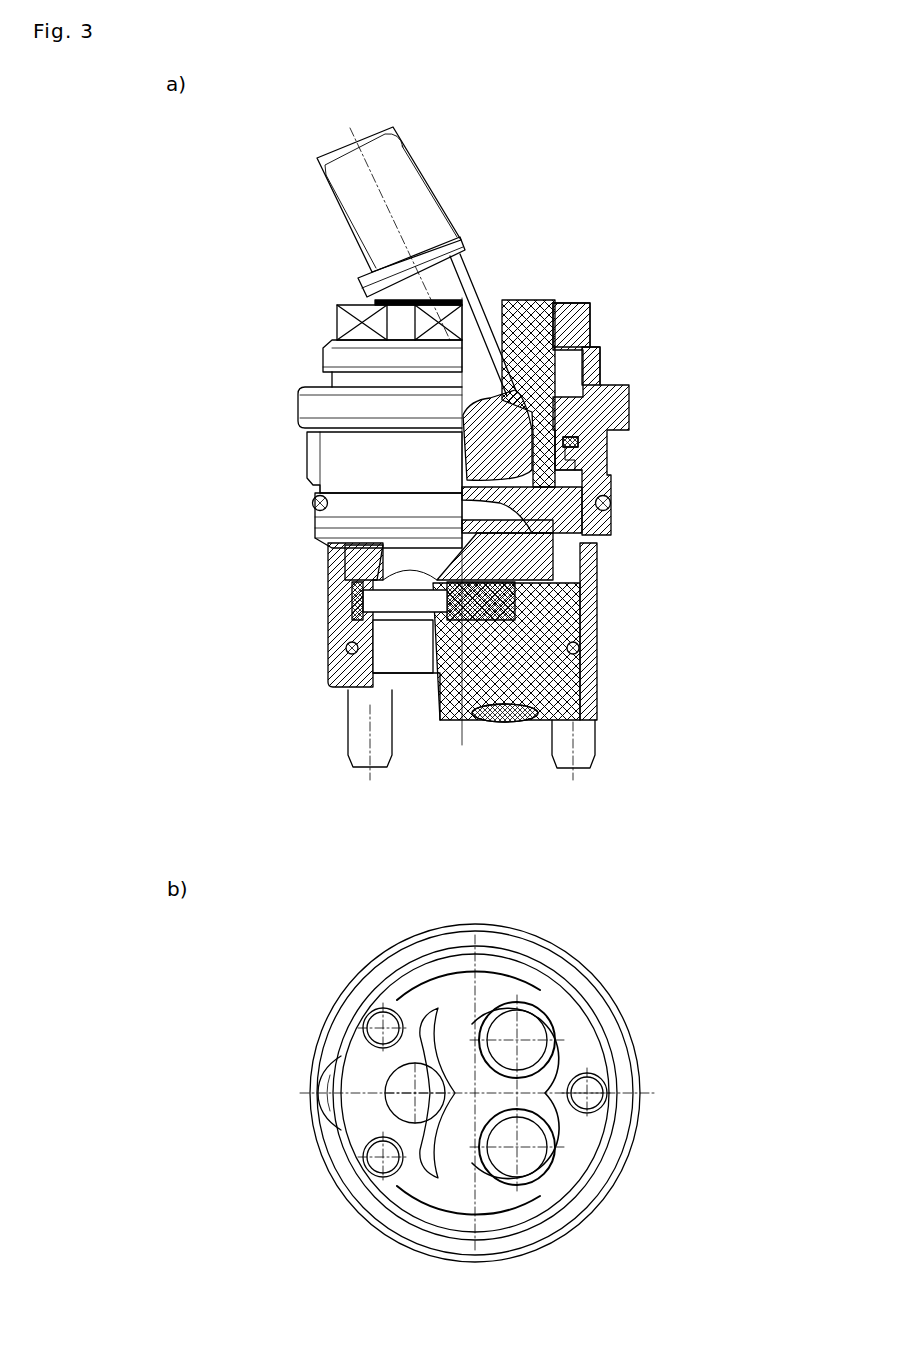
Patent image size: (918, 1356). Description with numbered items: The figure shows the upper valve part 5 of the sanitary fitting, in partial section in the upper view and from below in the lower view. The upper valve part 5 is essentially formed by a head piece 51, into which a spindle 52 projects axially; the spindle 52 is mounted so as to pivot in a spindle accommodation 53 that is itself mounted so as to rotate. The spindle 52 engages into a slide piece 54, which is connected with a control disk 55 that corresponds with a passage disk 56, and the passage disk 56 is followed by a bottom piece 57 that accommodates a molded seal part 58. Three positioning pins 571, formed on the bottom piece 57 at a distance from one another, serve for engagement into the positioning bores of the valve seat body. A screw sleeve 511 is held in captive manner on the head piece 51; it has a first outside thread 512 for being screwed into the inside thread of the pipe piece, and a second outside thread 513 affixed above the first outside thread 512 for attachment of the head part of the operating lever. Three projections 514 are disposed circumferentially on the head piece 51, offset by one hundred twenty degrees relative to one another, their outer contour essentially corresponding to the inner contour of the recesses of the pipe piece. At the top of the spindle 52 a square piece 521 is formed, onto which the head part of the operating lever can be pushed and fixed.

The upper valve part 5 is at (640, 169).
The head piece 51 is at (605, 449).
The screw sleeve 511 is at (592, 317).
The first outside thread 512 is at (599, 355).
The second outside thread 513 is at (629, 402).
The projections 514 is at (312, 460).
The spindle 52 is at (457, 267).
The square piece 521 is at (392, 185).
The spindle accommodation 53 is at (535, 313).
The slide piece 54 is at (550, 480).
The control disk 55 is at (575, 522).
The passage disk 56 is at (350, 565).
The bottom piece 57 is at (578, 622).
The positioning pins 571 is at (580, 740).
The molded seal part 58 is at (507, 723).